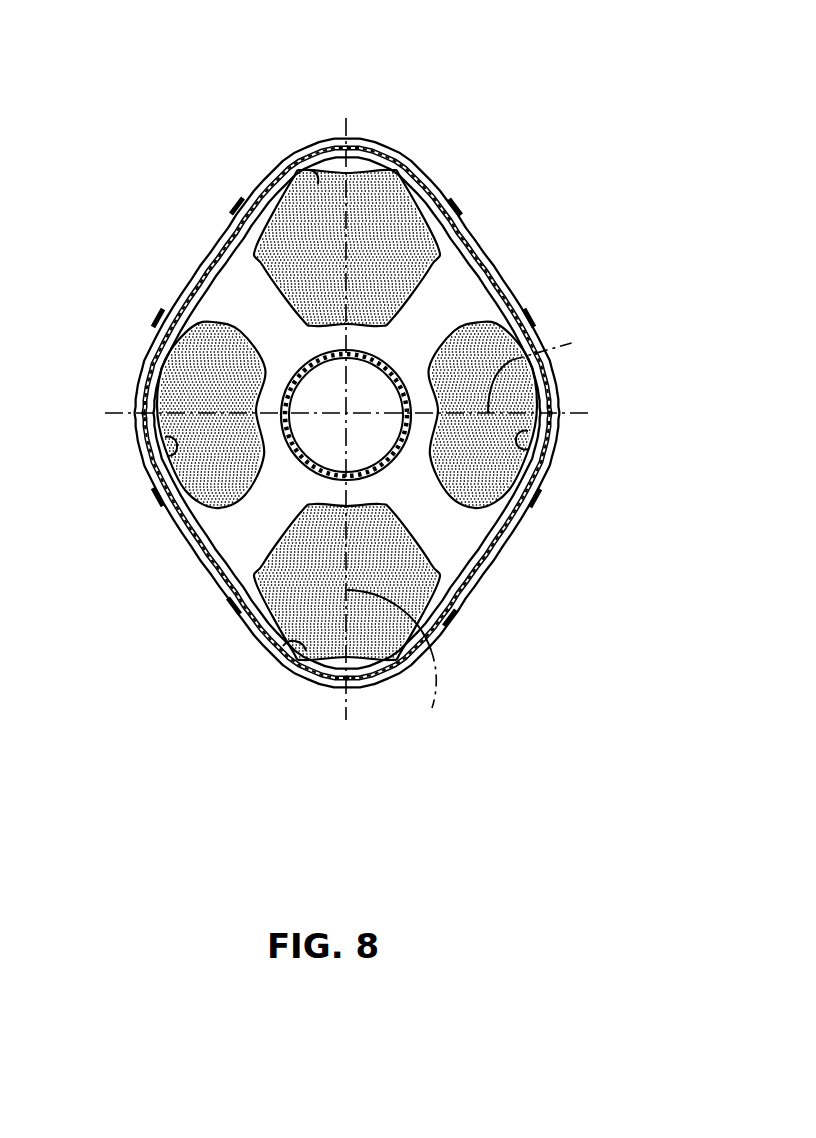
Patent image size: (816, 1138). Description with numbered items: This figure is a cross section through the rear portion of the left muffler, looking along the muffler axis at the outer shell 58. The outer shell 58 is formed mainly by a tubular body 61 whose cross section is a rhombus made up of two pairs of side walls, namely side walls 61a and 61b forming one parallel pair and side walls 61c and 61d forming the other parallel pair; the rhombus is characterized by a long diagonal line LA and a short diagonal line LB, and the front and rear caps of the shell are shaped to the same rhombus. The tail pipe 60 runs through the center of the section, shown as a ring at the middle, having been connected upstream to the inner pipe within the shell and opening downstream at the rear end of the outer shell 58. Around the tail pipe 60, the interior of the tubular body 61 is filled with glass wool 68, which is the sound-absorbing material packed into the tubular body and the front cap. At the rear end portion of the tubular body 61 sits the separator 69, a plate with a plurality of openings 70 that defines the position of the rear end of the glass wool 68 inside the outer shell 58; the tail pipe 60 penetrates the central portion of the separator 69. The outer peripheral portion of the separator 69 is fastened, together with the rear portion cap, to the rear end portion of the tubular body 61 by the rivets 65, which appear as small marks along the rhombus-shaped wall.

The outer shell 58 is at (406, 150).
The tail pipe 60 is at (376, 472).
The tubular body 61 is at (359, 426).
The side wall 61a is at (485, 258).
The side wall 61b is at (178, 535).
The side wall 61c is at (507, 530).
The side wall 61d is at (194, 270).
The rivets 65 is at (240, 207).
The glass wool 68 is at (390, 222).
The separator 69 is at (470, 295).
The openings 70 is at (317, 182).
The long diagonal line LA is at (398, 663).
The short diagonal line LB is at (551, 370).